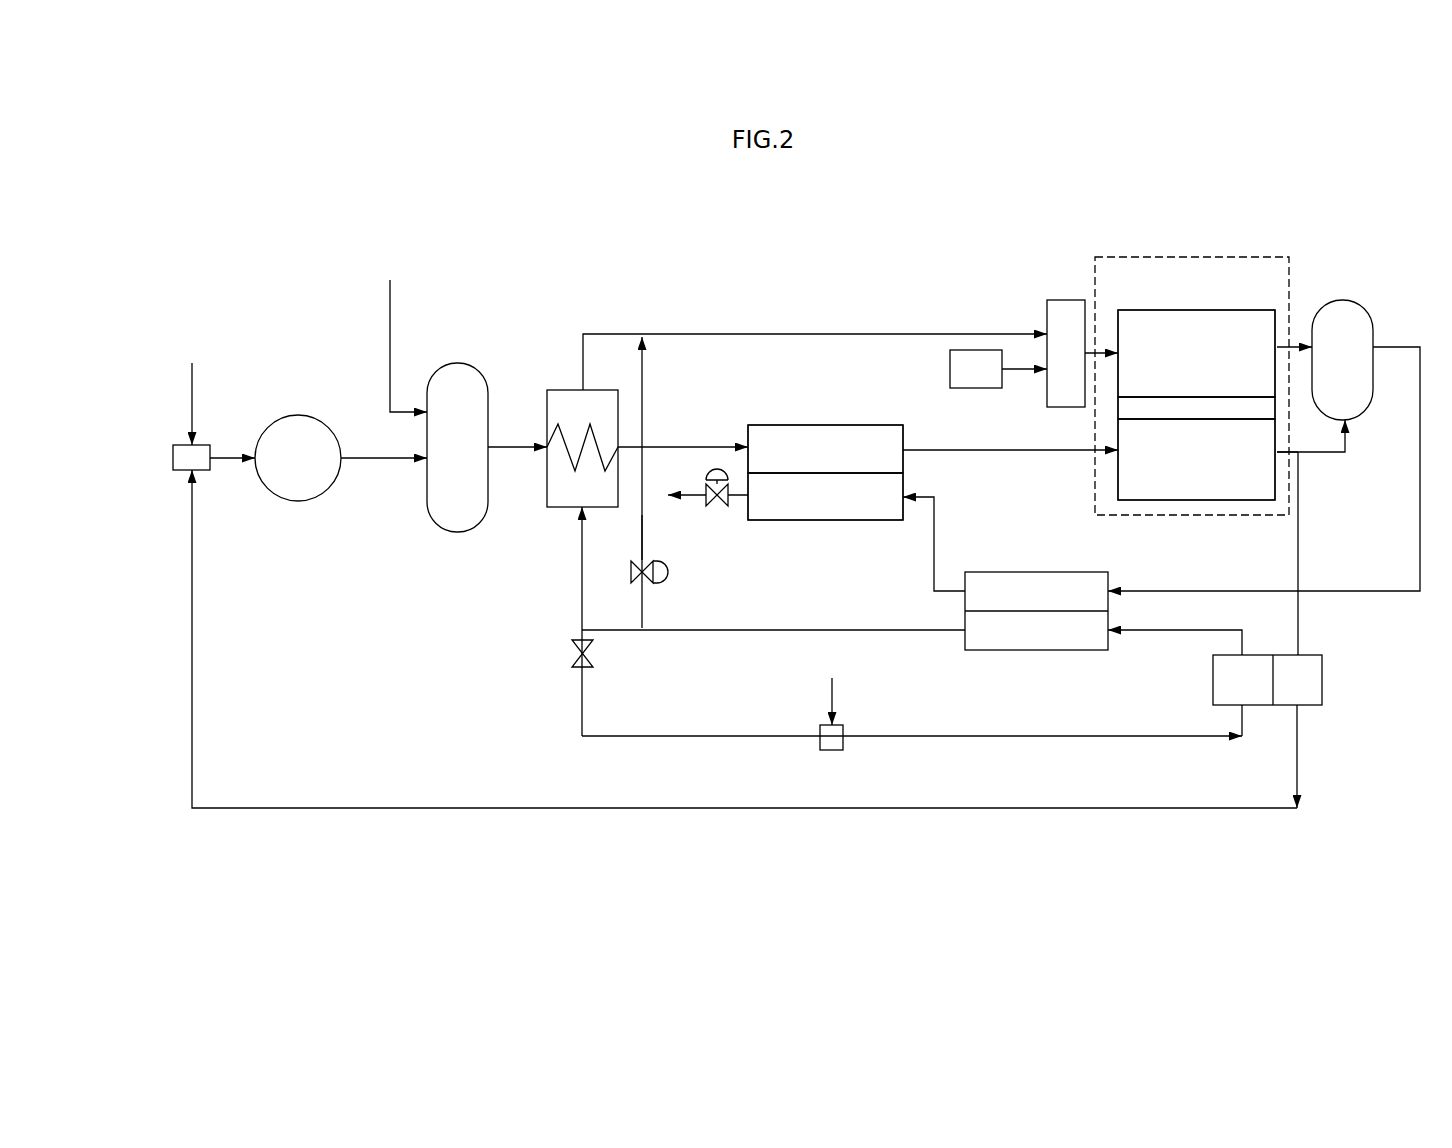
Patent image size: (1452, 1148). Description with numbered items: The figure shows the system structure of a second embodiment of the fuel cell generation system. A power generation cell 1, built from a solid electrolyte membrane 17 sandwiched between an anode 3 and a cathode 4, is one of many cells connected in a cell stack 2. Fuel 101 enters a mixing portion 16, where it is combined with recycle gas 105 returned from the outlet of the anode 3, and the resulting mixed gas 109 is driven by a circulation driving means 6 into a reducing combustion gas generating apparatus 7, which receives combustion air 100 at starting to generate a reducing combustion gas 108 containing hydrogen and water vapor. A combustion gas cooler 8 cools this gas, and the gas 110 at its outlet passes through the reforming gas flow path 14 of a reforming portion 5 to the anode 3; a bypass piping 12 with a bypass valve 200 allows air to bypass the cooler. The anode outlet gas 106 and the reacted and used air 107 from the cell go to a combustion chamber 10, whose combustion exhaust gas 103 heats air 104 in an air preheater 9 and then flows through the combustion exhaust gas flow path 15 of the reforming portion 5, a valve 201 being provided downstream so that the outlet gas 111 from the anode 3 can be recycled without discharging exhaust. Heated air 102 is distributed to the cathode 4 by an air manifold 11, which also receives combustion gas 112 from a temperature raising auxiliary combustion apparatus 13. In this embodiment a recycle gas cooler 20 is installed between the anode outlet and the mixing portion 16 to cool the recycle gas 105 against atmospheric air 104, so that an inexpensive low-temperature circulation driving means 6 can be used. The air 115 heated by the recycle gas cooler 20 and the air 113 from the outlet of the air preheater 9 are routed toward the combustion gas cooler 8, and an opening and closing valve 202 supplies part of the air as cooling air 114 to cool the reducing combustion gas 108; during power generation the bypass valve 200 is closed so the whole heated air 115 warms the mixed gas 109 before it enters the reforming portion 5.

The power generation cell 1 is at (1142, 310).
The cell stack 2 is at (1252, 258).
The anode 3 is at (1217, 500).
The cathode 4 is at (1200, 310).
The reforming portion 5 is at (815, 560).
The circulation driving means 6 is at (298, 501).
The reducing combustion gas generating apparatus 7 is at (455, 532).
The combustion gas cooler 8 is at (558, 390).
The air preheater 9 is at (1038, 572).
The combustion chamber 10 is at (1375, 302).
The air manifold 11 is at (1068, 300).
The bypass piping 12 is at (644, 536).
The temperature raising auxiliary combustion apparatus 13 is at (950, 370).
The reforming gas flow path 14 is at (903, 438).
The combustion exhaust gas flow path 15 is at (903, 485).
The mixing portion 16 is at (173, 458).
The solid electrolyte membrane 17 is at (1172, 412).
The recycle gas cooler 20 is at (1322, 682).
The combustion air 100 is at (397, 331).
The fuel 101 is at (193, 389).
The heated air 102 is at (817, 333).
The combustion exhaust gas 103 is at (1378, 595).
The air 104 is at (835, 686).
The recycle gas 105 is at (743, 810).
The anode outlet gas 106 is at (1324, 458).
The reacted and used air 107 is at (1286, 340).
The reducing combustion gas 108 is at (515, 440).
The mixed gas 109 is at (226, 455).
The gas in the outlet of the combustion gas cooler 110 is at (670, 445).
The outlet gas from the anode 111 is at (1283, 454).
The combustion gas 112 is at (1017, 373).
The air in the outlet of the air preheater 113 is at (742, 633).
The cooling air 114 is at (582, 710).
The air heated by the recycle gas cooler 115 is at (1163, 636).
The bypass valve 200 is at (668, 572).
The valve 201 is at (717, 468).
The opening and closing valve 202 is at (593, 655).